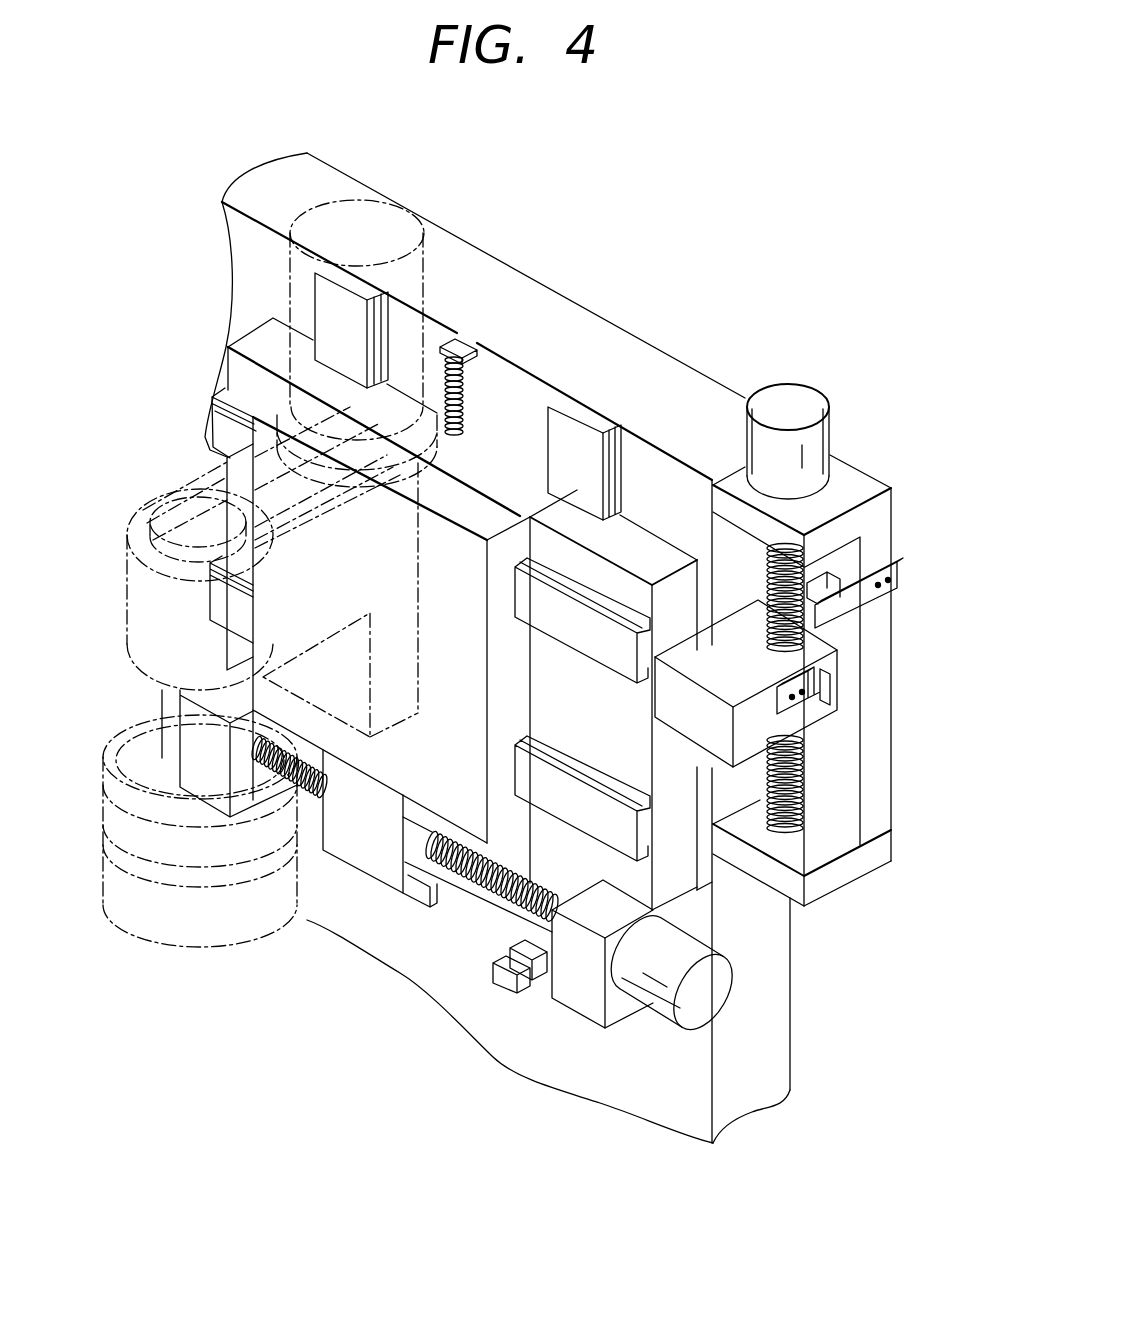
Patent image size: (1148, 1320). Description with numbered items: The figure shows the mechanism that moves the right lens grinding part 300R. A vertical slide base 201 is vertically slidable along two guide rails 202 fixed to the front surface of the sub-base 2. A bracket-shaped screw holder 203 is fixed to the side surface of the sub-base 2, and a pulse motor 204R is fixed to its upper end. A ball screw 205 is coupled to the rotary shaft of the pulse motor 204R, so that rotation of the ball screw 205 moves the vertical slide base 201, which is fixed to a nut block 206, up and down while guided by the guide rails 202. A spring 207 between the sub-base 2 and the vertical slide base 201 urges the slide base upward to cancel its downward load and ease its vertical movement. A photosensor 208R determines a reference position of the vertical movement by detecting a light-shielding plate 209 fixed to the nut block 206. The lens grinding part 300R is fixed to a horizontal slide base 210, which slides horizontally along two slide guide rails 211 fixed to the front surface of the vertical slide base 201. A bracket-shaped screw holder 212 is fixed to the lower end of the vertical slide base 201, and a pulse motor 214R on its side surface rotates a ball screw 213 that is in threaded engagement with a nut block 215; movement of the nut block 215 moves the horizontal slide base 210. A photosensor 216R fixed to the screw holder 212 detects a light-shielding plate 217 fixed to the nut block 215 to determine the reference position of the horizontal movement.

The sub-base 2 is at (540, 307).
The vertical slide base 201 is at (633, 540).
The guide rails 202 is at (343, 313).
The screw holder 203 is at (857, 483).
The pulse motor 204R is at (793, 400).
The ball screw 205 is at (804, 783).
The nut block 206 is at (797, 717).
The spring 207 is at (490, 353).
The photosensor 208R is at (858, 588).
The light-shielding plate 209 is at (818, 687).
The horizontal slide base 210 is at (350, 765).
The slide guide rails 211 is at (590, 805).
The screw holder 212 is at (590, 1007).
The ball screw 213 is at (483, 883).
The pulse motor 214R is at (717, 1000).
The nut block 215 is at (375, 855).
The photosensor 216R is at (500, 977).
The light-shielding plate 217 is at (413, 900).
The lens grinding part 300R is at (155, 474).